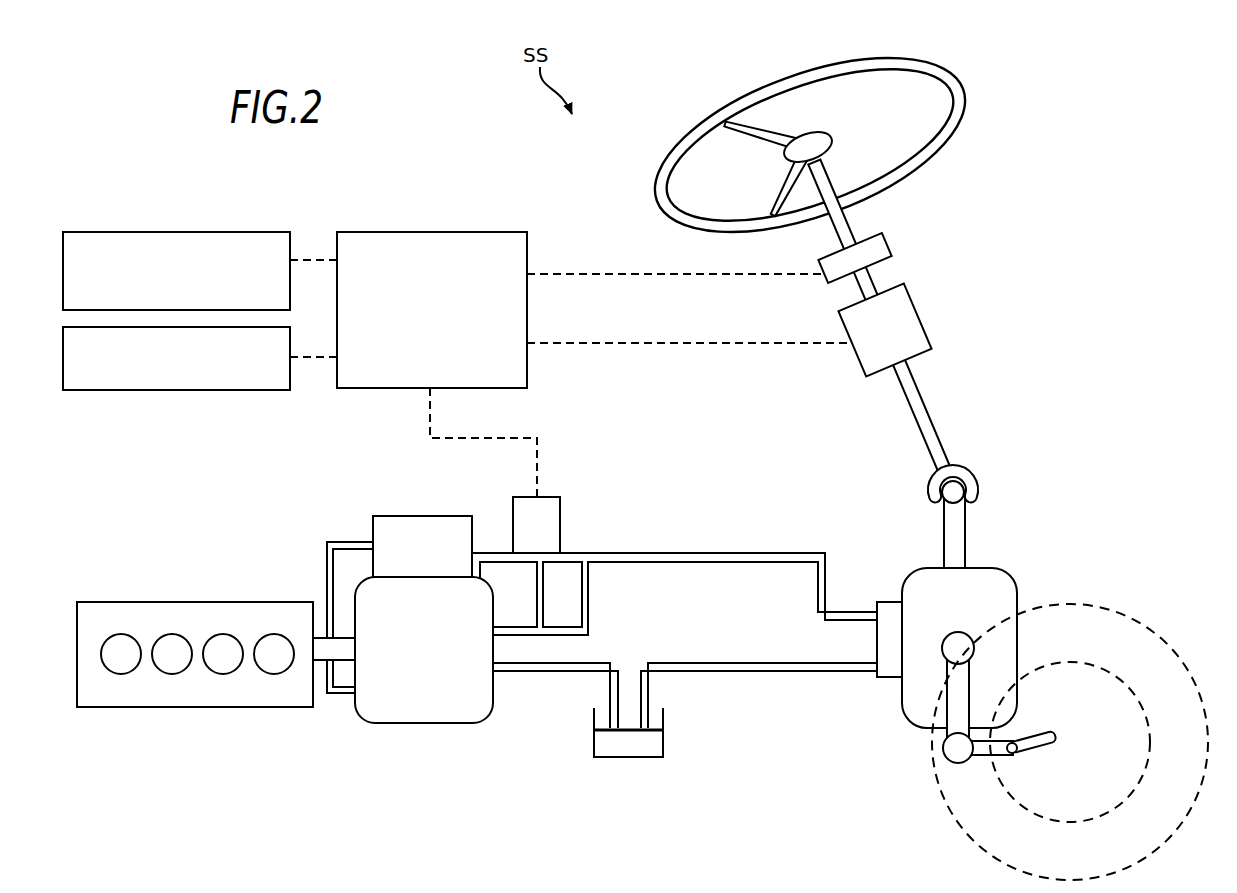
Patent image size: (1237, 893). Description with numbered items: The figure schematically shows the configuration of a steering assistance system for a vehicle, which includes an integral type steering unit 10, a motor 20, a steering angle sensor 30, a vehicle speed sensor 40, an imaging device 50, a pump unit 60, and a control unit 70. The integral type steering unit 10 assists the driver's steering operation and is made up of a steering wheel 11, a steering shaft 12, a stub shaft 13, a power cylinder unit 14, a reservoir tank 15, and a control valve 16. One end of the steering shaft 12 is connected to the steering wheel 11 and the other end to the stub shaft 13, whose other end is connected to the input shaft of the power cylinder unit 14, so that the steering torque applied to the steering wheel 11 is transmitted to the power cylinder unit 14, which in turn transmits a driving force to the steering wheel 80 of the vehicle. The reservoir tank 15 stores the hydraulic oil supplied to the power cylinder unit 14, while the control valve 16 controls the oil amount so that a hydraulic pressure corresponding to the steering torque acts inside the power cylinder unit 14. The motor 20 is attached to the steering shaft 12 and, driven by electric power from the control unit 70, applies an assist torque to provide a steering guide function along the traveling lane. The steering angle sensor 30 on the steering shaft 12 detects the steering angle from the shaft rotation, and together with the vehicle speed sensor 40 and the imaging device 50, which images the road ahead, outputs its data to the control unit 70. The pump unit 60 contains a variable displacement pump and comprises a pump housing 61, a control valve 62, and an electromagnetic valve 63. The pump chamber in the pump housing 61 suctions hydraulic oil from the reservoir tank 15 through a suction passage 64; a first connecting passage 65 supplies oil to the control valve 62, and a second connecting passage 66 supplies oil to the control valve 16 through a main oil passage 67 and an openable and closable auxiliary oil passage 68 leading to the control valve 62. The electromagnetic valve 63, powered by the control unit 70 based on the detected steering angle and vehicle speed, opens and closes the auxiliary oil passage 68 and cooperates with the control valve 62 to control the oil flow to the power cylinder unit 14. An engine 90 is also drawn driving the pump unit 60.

The integral type steering unit 10 is at (1023, 124).
The steering wheel 11 is at (887, 58).
The steering shaft 12 is at (929, 413).
The stub shaft 13 is at (966, 537).
The power cylinder unit 14 is at (1018, 598).
The reservoir tank 15 is at (665, 746).
The control valve 16 is at (877, 601).
The motor 20 is at (921, 322).
The steering angle sensor 30 is at (889, 245).
The vehicle speed sensor 40 is at (242, 231).
The imaging device 50 is at (243, 391).
The pump unit 60 is at (385, 482).
The pump housing 61 is at (461, 724).
The control valve 62 is at (445, 516).
The electromagnetic valve 63 is at (548, 497).
The suction passage 64 is at (521, 673).
The first connecting passage 65 is at (338, 543).
The second connecting passage 66 is at (692, 524).
The main oil passage 67 is at (588, 583).
The auxiliary oil passage 68 is at (481, 566).
The control unit 70 is at (505, 232).
The steering wheel (steered wheel) 80 is at (1117, 613).
The engine 90 is at (256, 601).